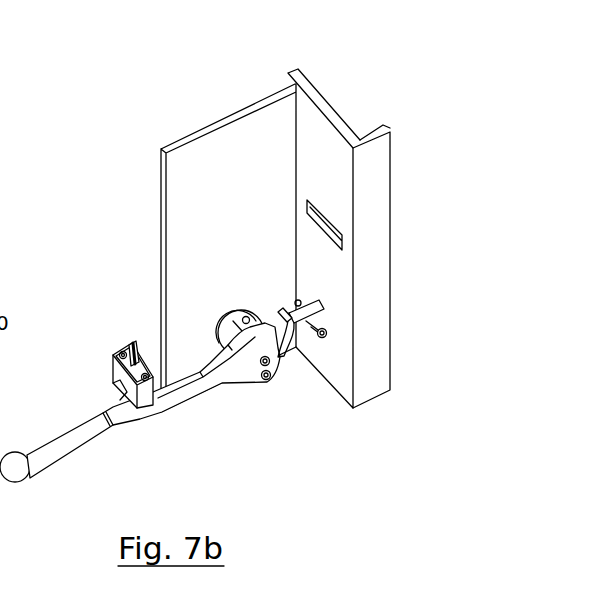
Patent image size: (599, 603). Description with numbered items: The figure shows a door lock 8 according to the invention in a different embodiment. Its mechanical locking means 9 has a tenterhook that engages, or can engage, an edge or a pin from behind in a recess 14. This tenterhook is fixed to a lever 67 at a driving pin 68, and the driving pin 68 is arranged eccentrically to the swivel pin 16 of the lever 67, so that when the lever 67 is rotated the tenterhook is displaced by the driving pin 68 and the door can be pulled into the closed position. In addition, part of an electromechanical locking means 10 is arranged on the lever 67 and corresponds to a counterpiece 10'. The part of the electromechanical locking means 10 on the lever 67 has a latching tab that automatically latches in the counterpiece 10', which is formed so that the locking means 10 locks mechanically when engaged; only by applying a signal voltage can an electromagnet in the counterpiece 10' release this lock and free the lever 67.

The door lock 8 is at (101, 86).
The electromechanical locking means 10 is at (110, 331).
The counterpiece 10' is at (396, 209).
The recess 14 is at (308, 321).
The mechanical locking means 9 is at (327, 332).
The swivel pin 16 is at (272, 360).
The driving pin 68 is at (273, 377).
The lever 67 is at (117, 420).